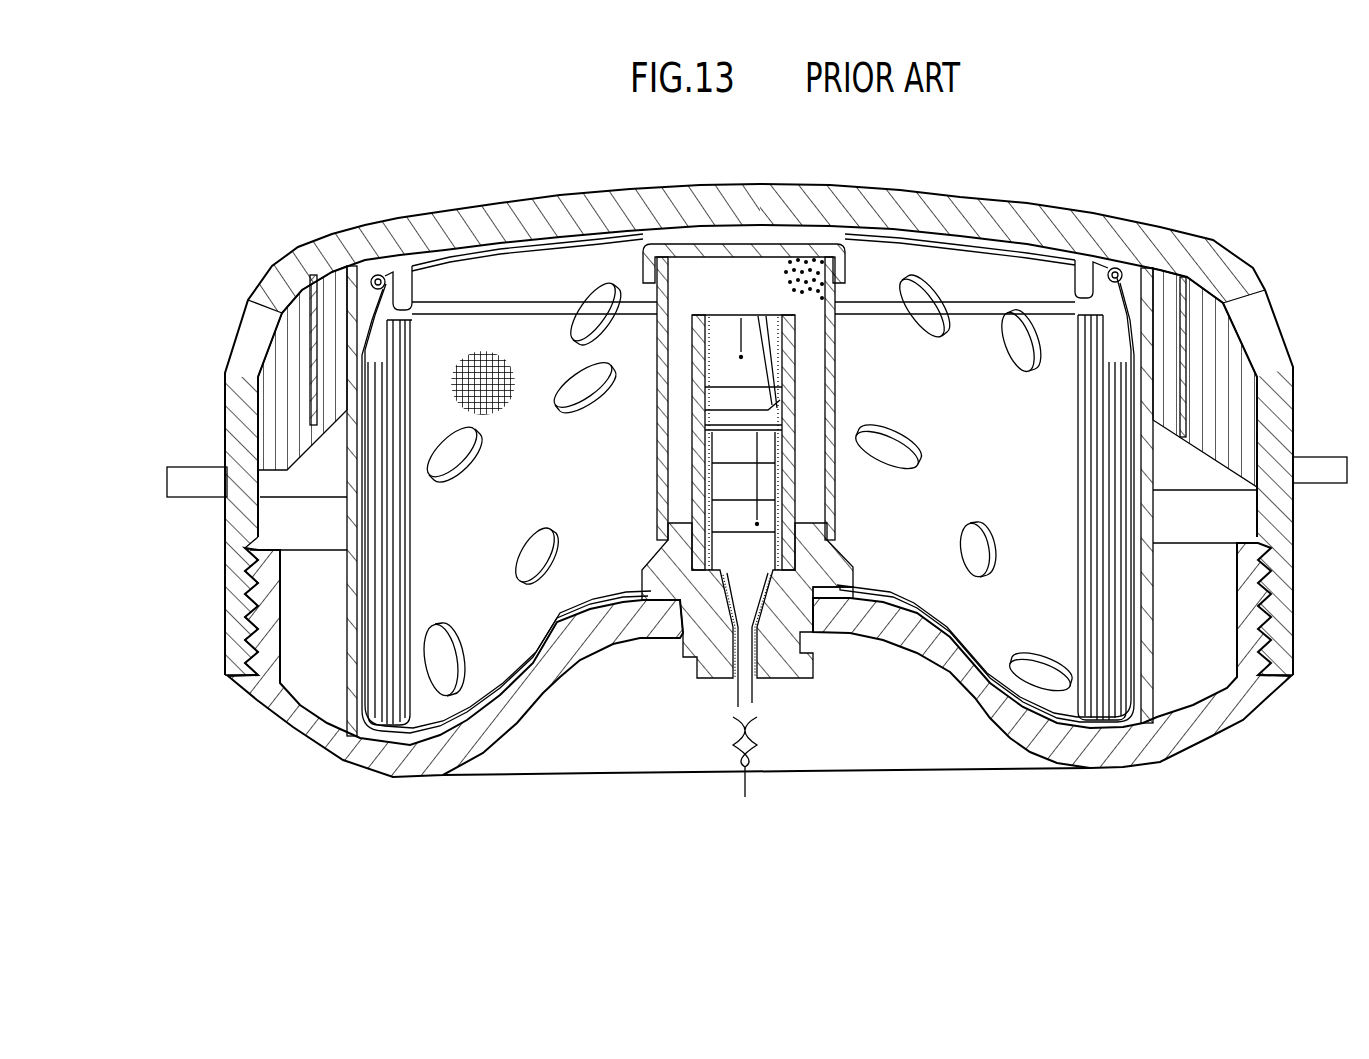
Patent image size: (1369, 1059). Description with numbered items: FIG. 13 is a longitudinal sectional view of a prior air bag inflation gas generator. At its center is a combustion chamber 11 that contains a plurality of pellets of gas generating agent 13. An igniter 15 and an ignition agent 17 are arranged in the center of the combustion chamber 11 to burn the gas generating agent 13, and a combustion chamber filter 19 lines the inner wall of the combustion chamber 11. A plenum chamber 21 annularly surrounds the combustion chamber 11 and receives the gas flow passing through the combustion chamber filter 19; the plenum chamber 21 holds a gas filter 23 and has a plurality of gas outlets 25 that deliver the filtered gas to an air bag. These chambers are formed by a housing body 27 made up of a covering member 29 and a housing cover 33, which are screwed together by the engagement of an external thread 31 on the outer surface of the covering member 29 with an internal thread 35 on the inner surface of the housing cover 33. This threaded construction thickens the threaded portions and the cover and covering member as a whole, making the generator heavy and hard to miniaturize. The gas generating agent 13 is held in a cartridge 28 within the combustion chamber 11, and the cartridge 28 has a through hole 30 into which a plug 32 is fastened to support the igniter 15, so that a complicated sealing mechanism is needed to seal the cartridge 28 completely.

The combustion chamber 11 is at (375, 312).
The gas generating agent 13 is at (916, 456).
The igniter 15 is at (730, 305).
The ignition agent 17 is at (838, 286).
The combustion chamber filter 19 is at (1073, 447).
The plenum chamber 21 is at (1205, 620).
The gas filter 23 is at (1266, 415).
The gas outlets 25 is at (240, 347).
The housing body 27 is at (863, 188).
The cartridge 28 is at (488, 708).
The covering member 29 is at (378, 760).
The through hole 30 is at (790, 615).
The external thread 31 is at (252, 688).
The plug 32 is at (706, 615).
The housing cover 33 is at (584, 192).
The internal thread 35 is at (258, 540).